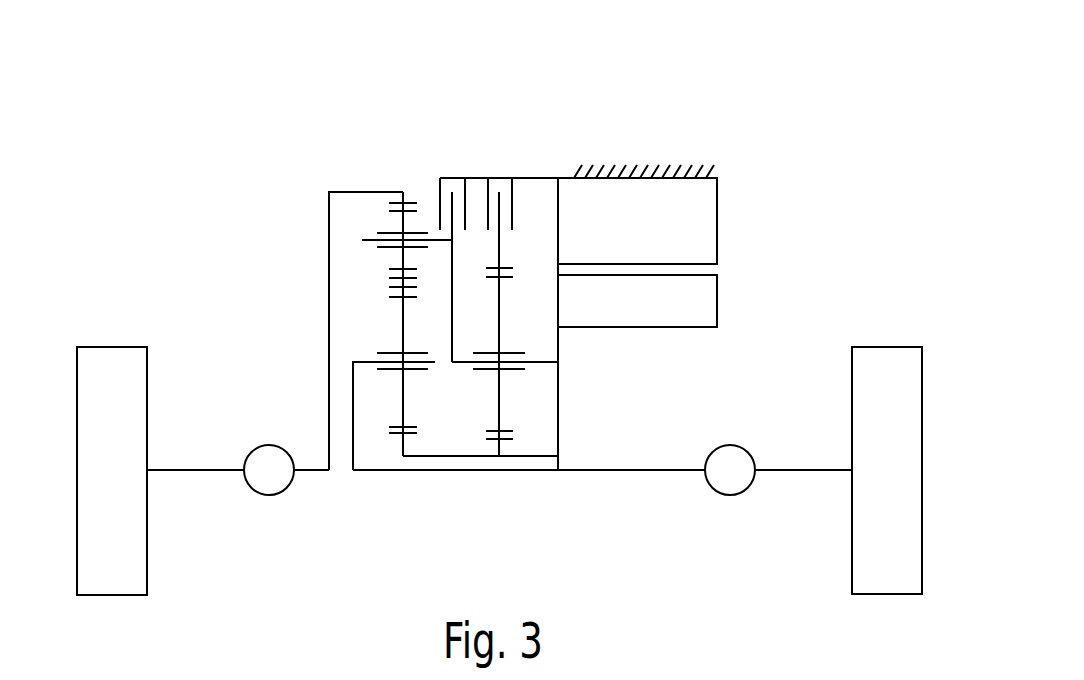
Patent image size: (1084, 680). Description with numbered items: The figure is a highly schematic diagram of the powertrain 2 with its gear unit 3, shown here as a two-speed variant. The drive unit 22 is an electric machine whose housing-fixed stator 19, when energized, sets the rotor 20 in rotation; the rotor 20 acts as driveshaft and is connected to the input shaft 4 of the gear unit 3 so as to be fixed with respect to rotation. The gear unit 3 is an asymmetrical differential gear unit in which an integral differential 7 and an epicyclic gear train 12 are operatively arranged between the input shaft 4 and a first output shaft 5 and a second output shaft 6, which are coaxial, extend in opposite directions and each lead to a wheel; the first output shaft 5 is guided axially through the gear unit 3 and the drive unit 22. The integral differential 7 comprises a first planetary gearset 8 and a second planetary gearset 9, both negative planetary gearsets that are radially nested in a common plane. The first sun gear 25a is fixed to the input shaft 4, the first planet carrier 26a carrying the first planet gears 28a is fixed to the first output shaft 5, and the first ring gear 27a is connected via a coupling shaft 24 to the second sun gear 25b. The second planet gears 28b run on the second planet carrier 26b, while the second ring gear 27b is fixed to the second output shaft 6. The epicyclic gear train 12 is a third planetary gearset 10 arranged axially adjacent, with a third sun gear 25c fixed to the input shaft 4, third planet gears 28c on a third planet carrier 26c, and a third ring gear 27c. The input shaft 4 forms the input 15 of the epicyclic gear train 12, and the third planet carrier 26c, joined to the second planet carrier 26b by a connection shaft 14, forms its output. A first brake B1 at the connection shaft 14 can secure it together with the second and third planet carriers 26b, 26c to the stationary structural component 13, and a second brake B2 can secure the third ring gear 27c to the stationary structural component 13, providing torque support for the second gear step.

The powertrain 2 is at (165, 95).
The gear unit 3 is at (283, 120).
The input shaft 4 is at (497, 370).
The first output shaft 5 is at (673, 472).
The second output shaft 6 is at (310, 474).
The integral differential 7 is at (356, 128).
The first planetary gearset 8 is at (368, 463).
The second planetary gearset 9 is at (426, 155).
The third planetary gearset 10 is at (481, 467).
The epicyclic gear train 12 is at (544, 185).
The stationary structural component 13 is at (662, 172).
The connection shaft 14 is at (465, 403).
The input of the epicyclic gear train 15 is at (561, 460).
The stator 19 is at (712, 212).
The rotor 20 is at (712, 300).
The drive unit 22 is at (741, 159).
The coupling shaft 24 is at (402, 285).
The first sun gear 25a is at (392, 438).
The second sun gear 25b is at (396, 277).
The third sun gear 25c is at (517, 438).
The first planet carrier 26a is at (367, 361).
The second planet carrier 26b is at (366, 240).
The third planet carrier 26c is at (545, 362).
The first ring gear 27a is at (402, 291).
The second ring gear 27b is at (409, 200).
The third ring gear 27c is at (504, 266).
The first planet gears 28a is at (400, 398).
The second planet gears 28b is at (392, 221).
The third planet gears 28c is at (505, 407).
The first brake B1 is at (471, 185).
The second brake B2 is at (524, 185).